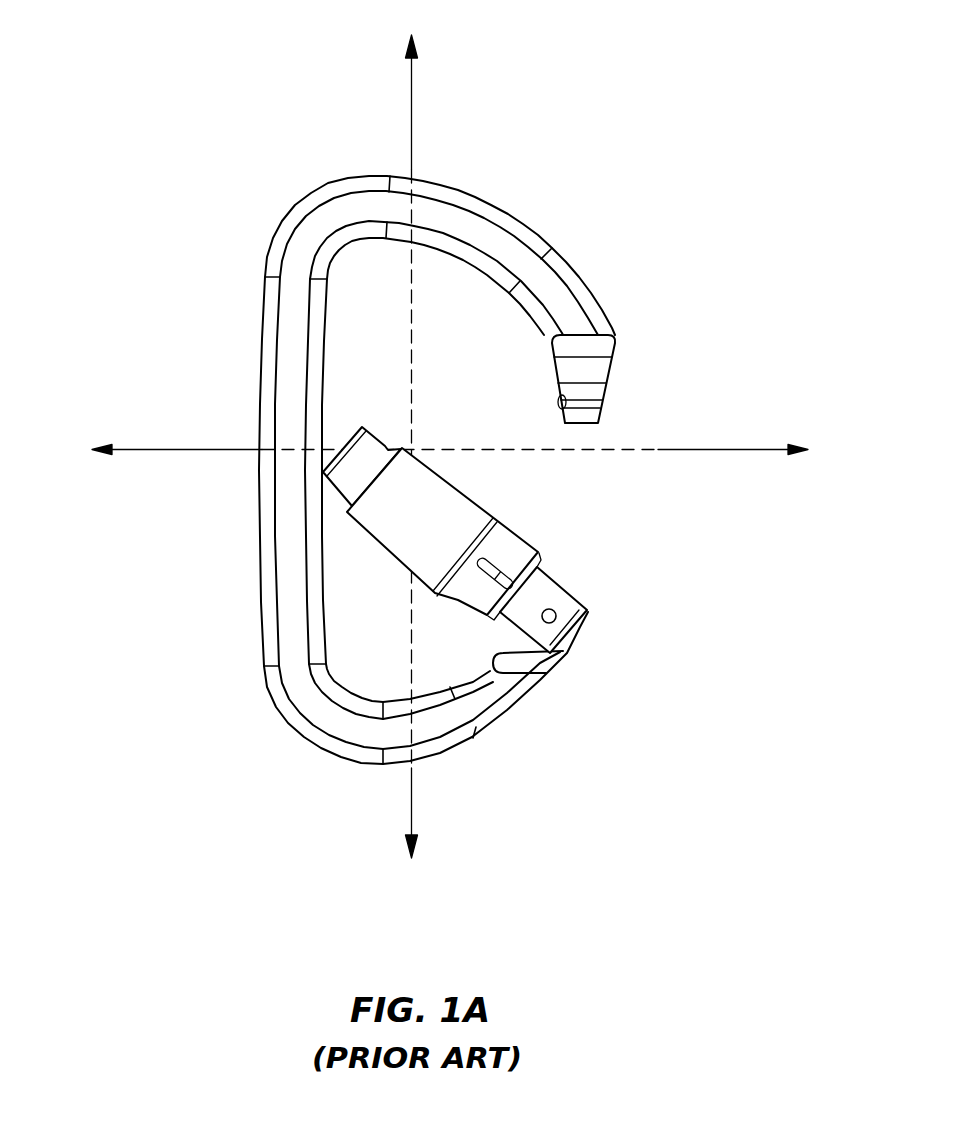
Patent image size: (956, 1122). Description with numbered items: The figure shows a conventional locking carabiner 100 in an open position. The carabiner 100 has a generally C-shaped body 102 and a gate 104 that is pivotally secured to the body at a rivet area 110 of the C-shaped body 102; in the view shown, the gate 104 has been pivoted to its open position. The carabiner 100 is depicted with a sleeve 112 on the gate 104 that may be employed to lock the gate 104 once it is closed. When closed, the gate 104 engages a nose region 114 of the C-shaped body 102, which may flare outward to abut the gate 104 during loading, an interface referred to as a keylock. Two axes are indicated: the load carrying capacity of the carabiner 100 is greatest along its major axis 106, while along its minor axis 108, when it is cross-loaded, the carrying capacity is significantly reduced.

The carabiner 100 is at (224, 507).
The C-shaped body 102 is at (315, 712).
The gate 104 is at (366, 441).
The major axis 106 is at (413, 448).
The minor axis 108 is at (450, 450).
The rivet area 110 is at (593, 605).
The sleeve 112 is at (438, 498).
The nose region 114 is at (622, 340).